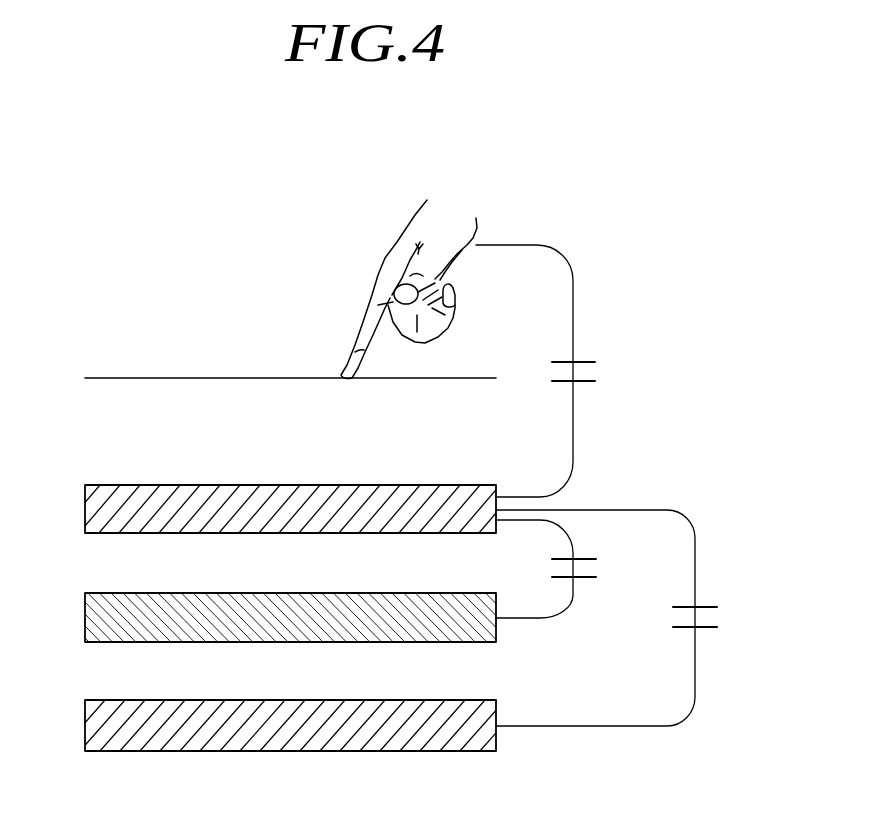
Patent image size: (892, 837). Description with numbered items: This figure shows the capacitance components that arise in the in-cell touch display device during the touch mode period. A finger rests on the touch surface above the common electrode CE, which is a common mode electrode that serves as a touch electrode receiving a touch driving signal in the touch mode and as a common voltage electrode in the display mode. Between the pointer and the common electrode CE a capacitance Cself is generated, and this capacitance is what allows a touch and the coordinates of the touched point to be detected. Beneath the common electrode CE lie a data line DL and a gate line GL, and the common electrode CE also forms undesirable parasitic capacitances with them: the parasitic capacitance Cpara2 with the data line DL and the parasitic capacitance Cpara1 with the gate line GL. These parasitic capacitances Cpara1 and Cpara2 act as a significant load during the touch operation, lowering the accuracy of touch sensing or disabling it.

The common electrode CE is at (289, 509).
The data line DL is at (292, 617).
The gate line GL is at (292, 725).
The capacitance Cself is at (568, 371).
The parasitic capacitance Cpara2 is at (587, 569).
The parasitic capacitance Cpara1 is at (648, 618).